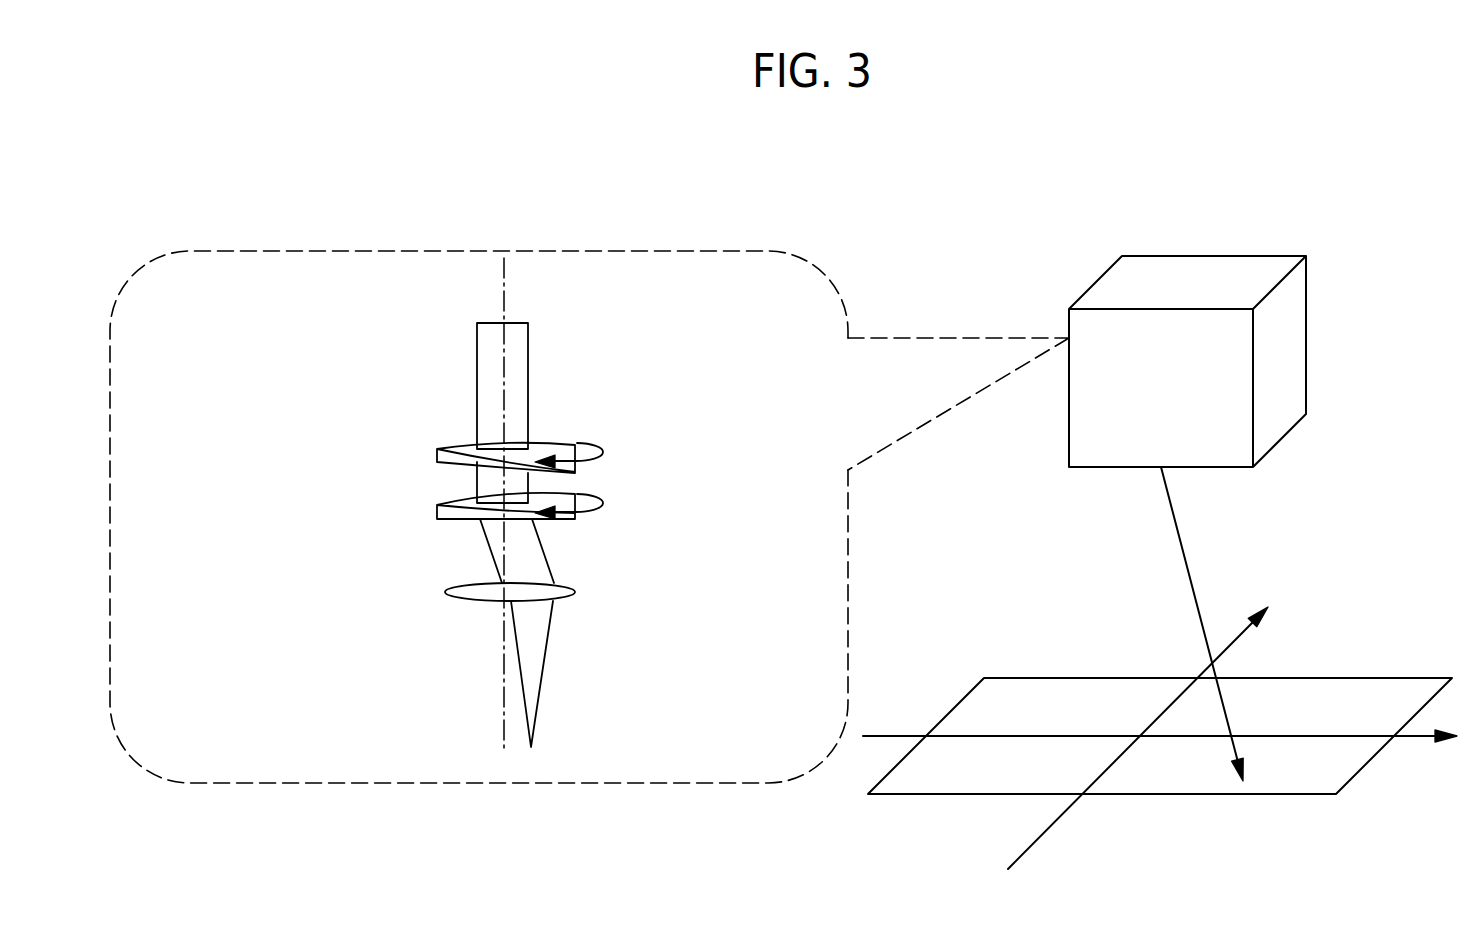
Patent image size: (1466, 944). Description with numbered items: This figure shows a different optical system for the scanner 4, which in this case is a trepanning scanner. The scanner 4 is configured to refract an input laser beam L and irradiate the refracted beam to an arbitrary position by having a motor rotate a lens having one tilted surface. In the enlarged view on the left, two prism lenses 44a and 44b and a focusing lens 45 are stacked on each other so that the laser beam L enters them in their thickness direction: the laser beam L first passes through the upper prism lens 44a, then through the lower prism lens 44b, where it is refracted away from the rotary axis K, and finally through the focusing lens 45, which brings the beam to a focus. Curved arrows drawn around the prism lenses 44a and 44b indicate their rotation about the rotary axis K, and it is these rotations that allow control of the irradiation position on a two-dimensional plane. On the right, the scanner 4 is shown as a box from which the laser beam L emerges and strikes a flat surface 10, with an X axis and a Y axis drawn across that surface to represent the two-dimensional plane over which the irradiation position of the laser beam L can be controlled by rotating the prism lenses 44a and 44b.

The scanner 4 is at (1300, 339).
The workpiece / stage surface 10 is at (1378, 678).
The prism lens 44a is at (437, 450).
The prism lens 44b is at (578, 513).
The focusing lens 45 is at (470, 582).
The laser beam L is at (477, 349).
The rotary axis K is at (502, 662).
The X axis X is at (1160, 753).
The Y axis Y is at (1157, 732).